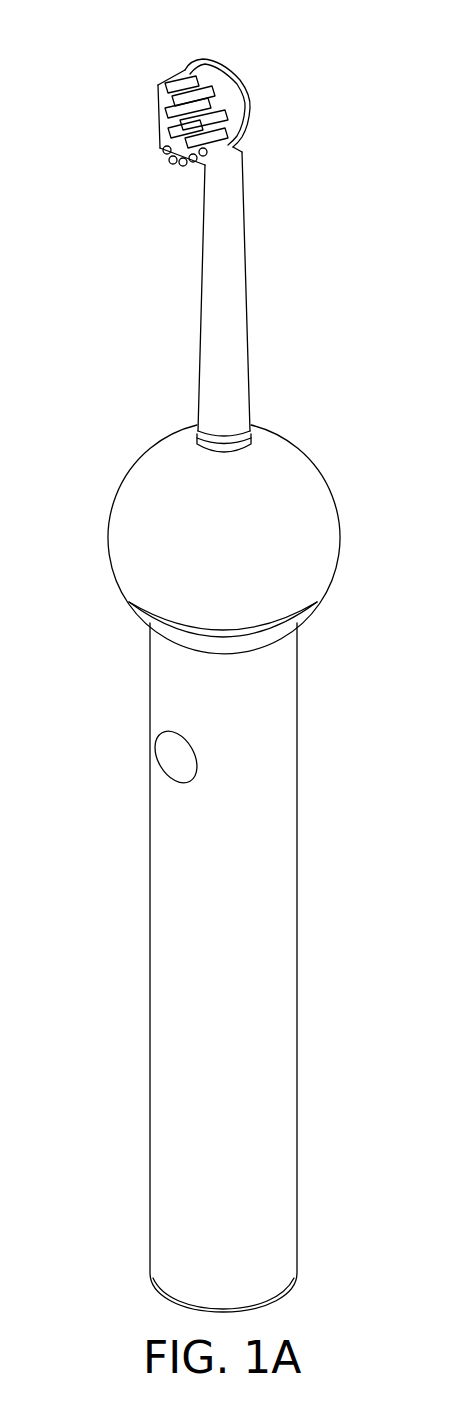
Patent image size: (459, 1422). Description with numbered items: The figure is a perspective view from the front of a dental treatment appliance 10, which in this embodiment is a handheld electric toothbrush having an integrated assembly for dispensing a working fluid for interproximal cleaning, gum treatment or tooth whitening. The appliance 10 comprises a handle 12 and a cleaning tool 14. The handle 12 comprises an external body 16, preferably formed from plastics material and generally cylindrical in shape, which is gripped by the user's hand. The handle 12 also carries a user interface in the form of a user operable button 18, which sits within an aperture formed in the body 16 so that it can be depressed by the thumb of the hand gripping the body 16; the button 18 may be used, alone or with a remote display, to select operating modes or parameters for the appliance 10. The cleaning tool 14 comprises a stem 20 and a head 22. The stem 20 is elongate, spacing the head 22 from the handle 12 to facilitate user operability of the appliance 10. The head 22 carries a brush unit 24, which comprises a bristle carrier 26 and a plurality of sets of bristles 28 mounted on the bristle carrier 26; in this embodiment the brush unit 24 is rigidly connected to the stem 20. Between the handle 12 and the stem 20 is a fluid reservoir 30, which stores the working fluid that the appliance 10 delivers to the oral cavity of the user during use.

The dental treatment appliance 10 is at (85, 420).
The handle 12 is at (307, 980).
The cleaning tool 14 is at (310, 408).
The external body 16 is at (167, 992).
The user operable button 18 is at (165, 757).
The stem 20 is at (238, 290).
The head 22 is at (267, 90).
The brush unit 24 is at (137, 67).
The bristle carrier 26 is at (207, 67).
The bristles 28 is at (170, 157).
The fluid reservoir 30 is at (330, 545).